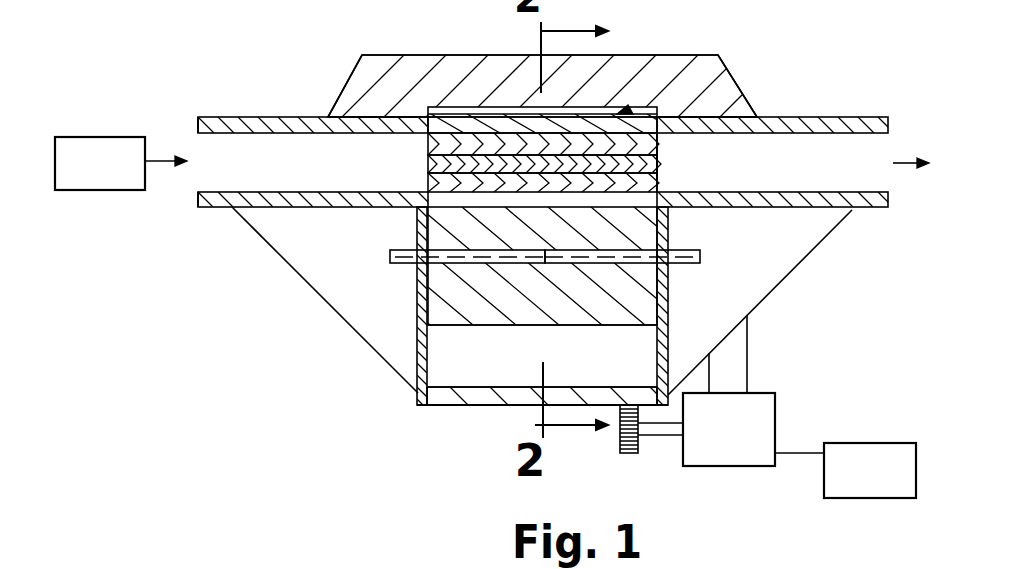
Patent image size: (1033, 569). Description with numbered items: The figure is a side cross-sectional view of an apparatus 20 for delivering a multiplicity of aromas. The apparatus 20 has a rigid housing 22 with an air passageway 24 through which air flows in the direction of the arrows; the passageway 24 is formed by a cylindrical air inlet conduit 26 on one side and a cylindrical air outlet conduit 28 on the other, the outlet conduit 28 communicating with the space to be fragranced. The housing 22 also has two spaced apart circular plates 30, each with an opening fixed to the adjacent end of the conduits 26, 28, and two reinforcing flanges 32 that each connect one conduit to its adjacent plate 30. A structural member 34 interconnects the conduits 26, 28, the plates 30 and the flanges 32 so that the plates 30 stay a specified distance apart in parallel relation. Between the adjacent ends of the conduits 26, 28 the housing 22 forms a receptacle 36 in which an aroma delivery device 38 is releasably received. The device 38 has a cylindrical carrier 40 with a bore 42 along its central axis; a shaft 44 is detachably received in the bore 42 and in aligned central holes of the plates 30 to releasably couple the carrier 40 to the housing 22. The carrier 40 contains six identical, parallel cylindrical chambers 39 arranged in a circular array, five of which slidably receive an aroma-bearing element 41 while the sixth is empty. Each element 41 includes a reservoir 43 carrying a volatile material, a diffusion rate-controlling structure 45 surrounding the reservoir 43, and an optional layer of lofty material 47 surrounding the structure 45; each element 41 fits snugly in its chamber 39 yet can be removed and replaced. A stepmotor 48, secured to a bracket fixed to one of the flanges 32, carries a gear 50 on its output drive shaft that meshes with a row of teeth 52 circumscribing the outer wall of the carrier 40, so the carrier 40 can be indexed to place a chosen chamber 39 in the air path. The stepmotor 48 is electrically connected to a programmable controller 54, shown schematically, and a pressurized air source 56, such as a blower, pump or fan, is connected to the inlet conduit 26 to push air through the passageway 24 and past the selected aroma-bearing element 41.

The apparatus for delivering a multiplicity of aromas 20 is at (762, 58).
The rigid housing 22 is at (280, 112).
The air passageway 24 is at (208, 137).
The air inlet conduit 26 is at (203, 208).
The air outlet conduit 28 is at (870, 128).
The circular plates 30 is at (417, 280).
The reinforcing flanges 32 is at (320, 270).
The structural member 34 is at (718, 65).
The receptacle 36 is at (447, 404).
The aroma delivery device 38 is at (490, 415).
The cylindrical chambers 39 is at (420, 174).
The cylindrical carrier 40 is at (462, 395).
The aroma-bearing element 41 is at (420, 146).
The bore 42 is at (425, 235).
The reservoir 43 is at (652, 163).
The shaft 44 is at (694, 252).
The diffusion rate-controlling structure 45 is at (658, 142).
The layer of lofty material 47 is at (463, 132).
The stepmotor 48 is at (755, 398).
The gear 50 is at (628, 453).
The row of teeth 52 is at (648, 110).
The programmable controller 54 is at (877, 462).
The pressurized air source 56 is at (113, 175).